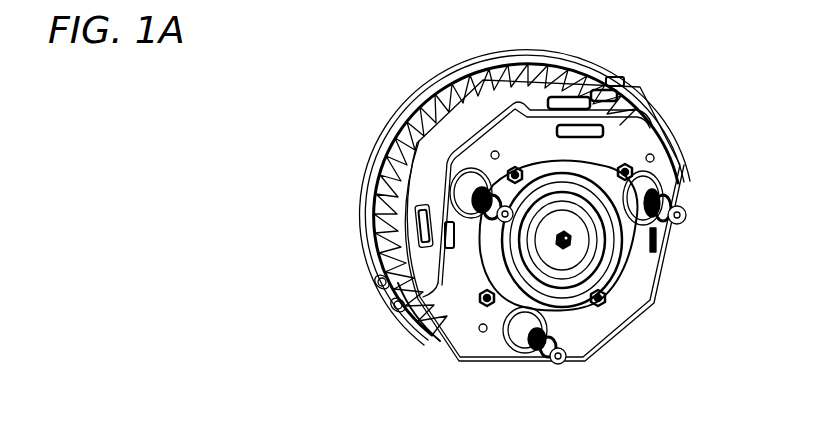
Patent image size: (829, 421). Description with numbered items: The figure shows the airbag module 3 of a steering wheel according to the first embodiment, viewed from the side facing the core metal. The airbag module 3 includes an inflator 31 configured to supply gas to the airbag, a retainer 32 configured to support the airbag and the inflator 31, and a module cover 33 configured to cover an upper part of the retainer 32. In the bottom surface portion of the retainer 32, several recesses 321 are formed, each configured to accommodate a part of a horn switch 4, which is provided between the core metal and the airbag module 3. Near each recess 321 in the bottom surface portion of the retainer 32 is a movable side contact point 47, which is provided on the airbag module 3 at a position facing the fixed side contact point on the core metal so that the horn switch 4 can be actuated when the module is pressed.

The airbag module 3 is at (674, 75).
The inflator 31 is at (518, 267).
The retainer 32 is at (617, 318).
The module cover 33 is at (384, 128).
The recess 321 is at (452, 186).
The horn switch 4 is at (472, 159).
The movable side contact point 47 is at (500, 156).